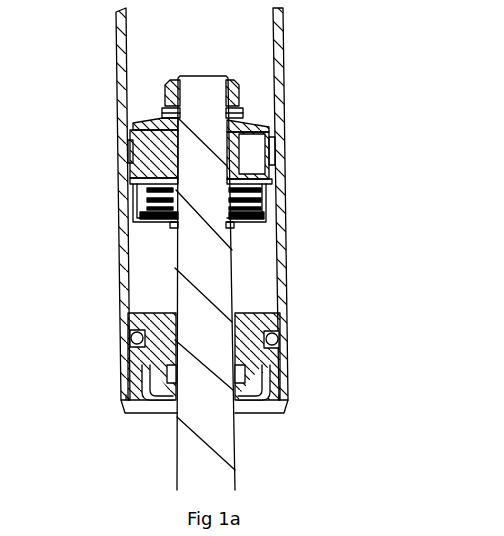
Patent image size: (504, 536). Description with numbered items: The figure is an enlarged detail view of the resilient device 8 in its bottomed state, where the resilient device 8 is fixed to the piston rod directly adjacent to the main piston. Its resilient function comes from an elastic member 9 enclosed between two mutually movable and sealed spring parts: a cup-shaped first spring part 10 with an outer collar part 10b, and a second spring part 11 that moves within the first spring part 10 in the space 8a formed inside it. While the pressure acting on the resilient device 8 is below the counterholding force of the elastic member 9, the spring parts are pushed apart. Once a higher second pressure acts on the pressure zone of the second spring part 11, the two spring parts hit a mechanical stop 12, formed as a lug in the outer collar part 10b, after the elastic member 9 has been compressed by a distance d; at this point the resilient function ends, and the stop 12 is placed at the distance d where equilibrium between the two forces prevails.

The resilient device 8 is at (132, 200).
The space 8a is at (263, 216).
The elastic member 9 is at (258, 178).
The first spring part 10 is at (130, 177).
The outer collar part 10b is at (135, 208).
The second spring part 11 is at (157, 221).
The mechanical stop 12 is at (262, 201).
The distance d is at (262, 207).